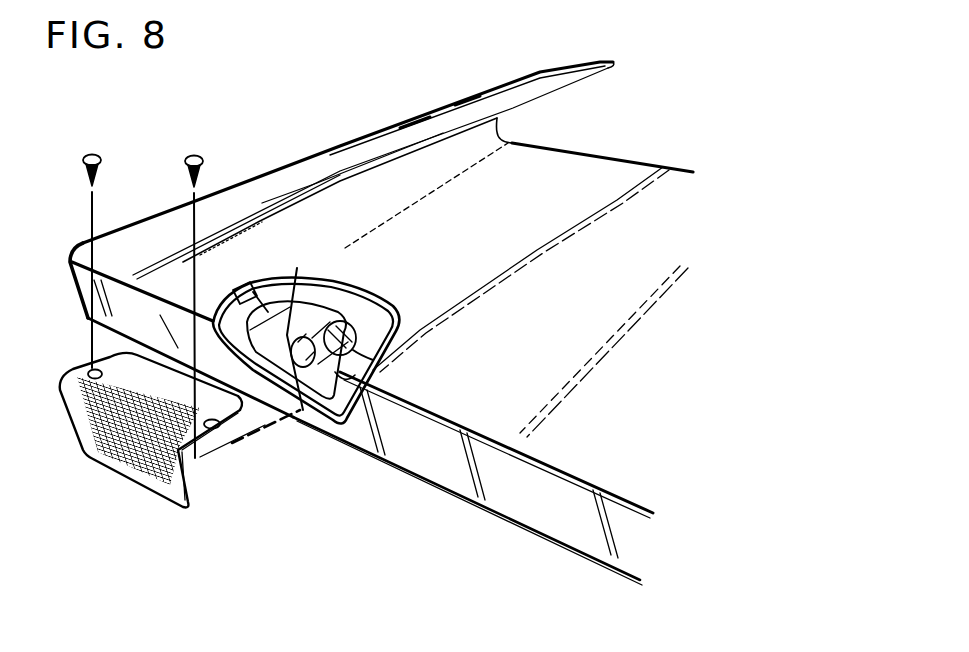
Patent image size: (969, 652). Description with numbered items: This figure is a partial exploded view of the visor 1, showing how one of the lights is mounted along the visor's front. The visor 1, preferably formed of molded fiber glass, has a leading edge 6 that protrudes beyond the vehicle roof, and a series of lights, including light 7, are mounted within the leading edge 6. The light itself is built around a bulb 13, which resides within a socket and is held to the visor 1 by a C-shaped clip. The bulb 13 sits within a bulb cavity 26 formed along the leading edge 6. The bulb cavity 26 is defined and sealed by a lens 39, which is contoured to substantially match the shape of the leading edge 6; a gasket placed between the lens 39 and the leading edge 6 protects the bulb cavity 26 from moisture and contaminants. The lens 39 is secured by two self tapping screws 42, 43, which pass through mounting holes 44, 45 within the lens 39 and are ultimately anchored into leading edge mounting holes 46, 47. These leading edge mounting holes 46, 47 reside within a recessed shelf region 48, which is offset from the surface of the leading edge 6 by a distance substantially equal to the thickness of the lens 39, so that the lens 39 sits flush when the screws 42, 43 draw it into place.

The visor 1 is at (331, 112).
The leading edge 6 is at (537, 500).
The light 7 is at (276, 470).
The bulb 13 is at (367, 308).
The bulb cavity 26 is at (300, 305).
The lens 39 is at (153, 487).
The self tapping screw 42 is at (91, 152).
The self tapping screw 43 is at (195, 152).
The mounting hole 44 is at (86, 368).
The mounting hole 45 is at (222, 424).
The leading edge mounting hole 46 is at (277, 290).
The leading edge mounting hole 47 is at (373, 360).
The recessed shelf region 48 is at (327, 287).